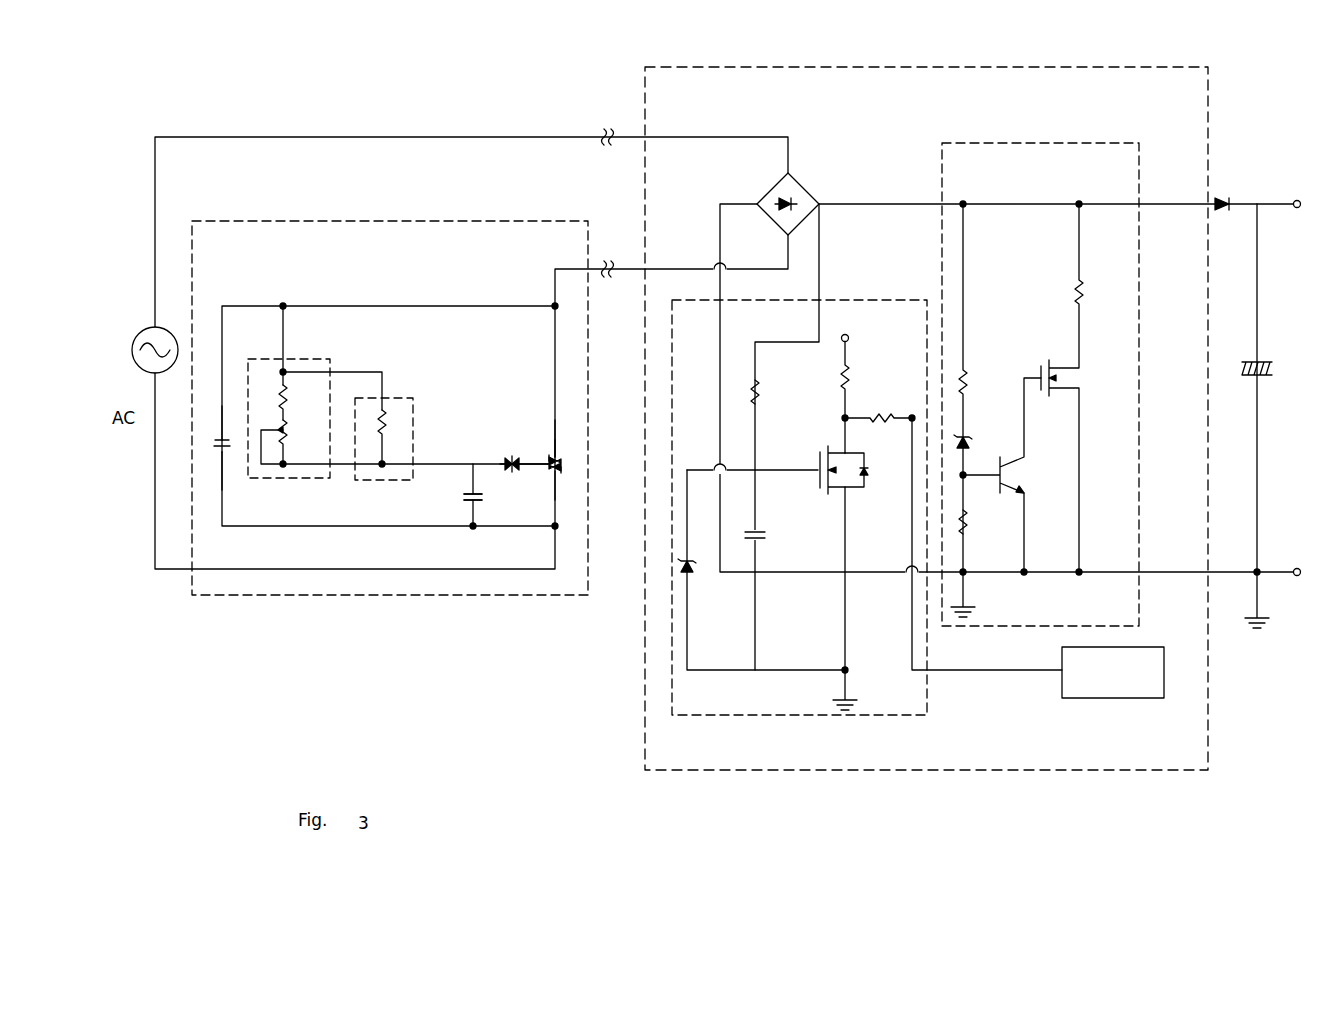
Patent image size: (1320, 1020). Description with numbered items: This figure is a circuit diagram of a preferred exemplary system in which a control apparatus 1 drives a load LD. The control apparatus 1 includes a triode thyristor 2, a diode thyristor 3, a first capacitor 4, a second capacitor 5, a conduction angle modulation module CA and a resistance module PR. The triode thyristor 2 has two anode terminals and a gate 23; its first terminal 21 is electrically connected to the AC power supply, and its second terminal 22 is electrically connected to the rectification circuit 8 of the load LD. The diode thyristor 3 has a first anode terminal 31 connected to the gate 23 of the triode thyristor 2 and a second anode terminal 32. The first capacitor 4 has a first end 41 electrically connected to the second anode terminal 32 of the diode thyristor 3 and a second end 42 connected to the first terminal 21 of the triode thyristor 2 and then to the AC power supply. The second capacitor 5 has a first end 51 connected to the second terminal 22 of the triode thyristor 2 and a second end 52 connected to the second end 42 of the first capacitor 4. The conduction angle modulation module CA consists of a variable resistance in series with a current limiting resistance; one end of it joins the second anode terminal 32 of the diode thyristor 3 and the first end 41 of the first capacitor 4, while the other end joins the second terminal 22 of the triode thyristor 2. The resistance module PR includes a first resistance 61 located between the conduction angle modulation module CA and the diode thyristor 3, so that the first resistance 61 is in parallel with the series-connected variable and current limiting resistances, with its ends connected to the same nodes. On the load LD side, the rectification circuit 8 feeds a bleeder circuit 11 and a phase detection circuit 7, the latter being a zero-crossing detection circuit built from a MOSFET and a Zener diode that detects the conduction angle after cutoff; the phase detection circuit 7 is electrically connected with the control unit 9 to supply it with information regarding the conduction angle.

The control apparatus 1 is at (482, 597).
The triode thyristor 2 is at (568, 465).
The first terminal 21 is at (557, 469).
The second terminal 22 is at (558, 461).
The gate 23 is at (553, 461).
The diode thyristor 3 is at (514, 457).
The first anode terminal 31 is at (516, 468).
The second anode terminal 32 is at (508, 463).
The first capacitor 4 is at (466, 497).
The first end 41 is at (470, 492).
The second end 42 is at (470, 502).
The second capacitor 5 is at (211, 444).
The first end 51 is at (221, 438).
The second end 52 is at (221, 455).
The first resistance 61 is at (386, 424).
The phase detection circuit 7 is at (718, 716).
The rectification circuit 8 is at (804, 170).
The control unit 9 is at (1146, 700).
The bleeder circuit 11 is at (1010, 143).
The conduction angle modulation module CA is at (312, 356).
The resistance module PR is at (400, 396).
The load LD is at (1210, 730).